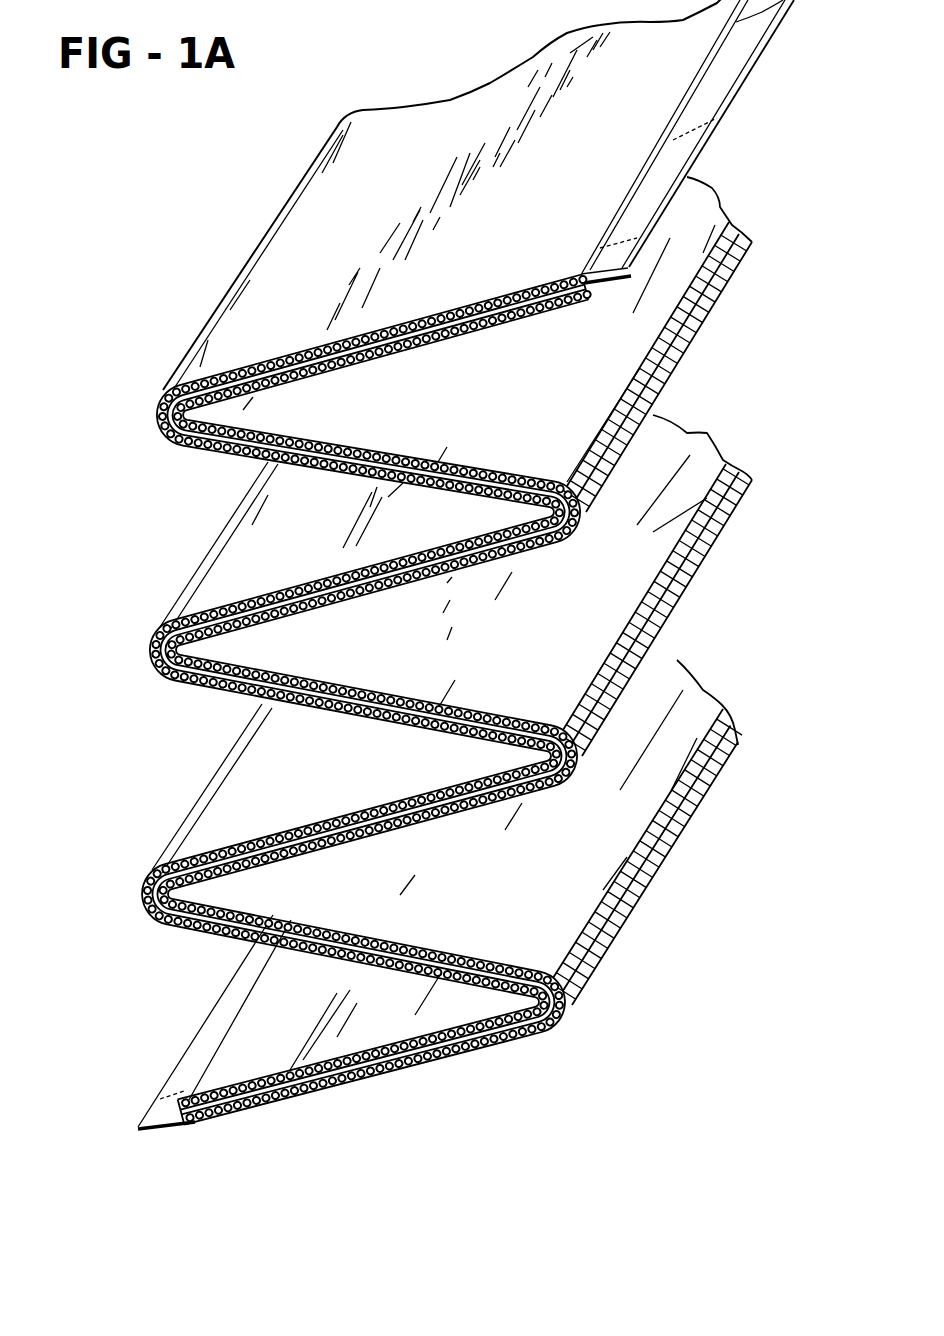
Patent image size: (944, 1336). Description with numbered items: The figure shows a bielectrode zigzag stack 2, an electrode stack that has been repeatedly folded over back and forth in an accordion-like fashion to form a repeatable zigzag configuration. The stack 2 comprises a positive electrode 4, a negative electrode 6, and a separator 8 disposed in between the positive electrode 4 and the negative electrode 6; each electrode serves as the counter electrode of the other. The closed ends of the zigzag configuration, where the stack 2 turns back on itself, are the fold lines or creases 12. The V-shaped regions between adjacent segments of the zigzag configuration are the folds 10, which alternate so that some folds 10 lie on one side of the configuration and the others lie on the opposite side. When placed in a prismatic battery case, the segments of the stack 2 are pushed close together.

The bielectrode zigzag stack 2 is at (681, 962).
The positive electrode 4 is at (527, 280).
The negative electrode 6 is at (556, 315).
The separator 8 is at (638, 270).
The folds 10 is at (162, 457).
The fold lines or creases 12 is at (151, 409).